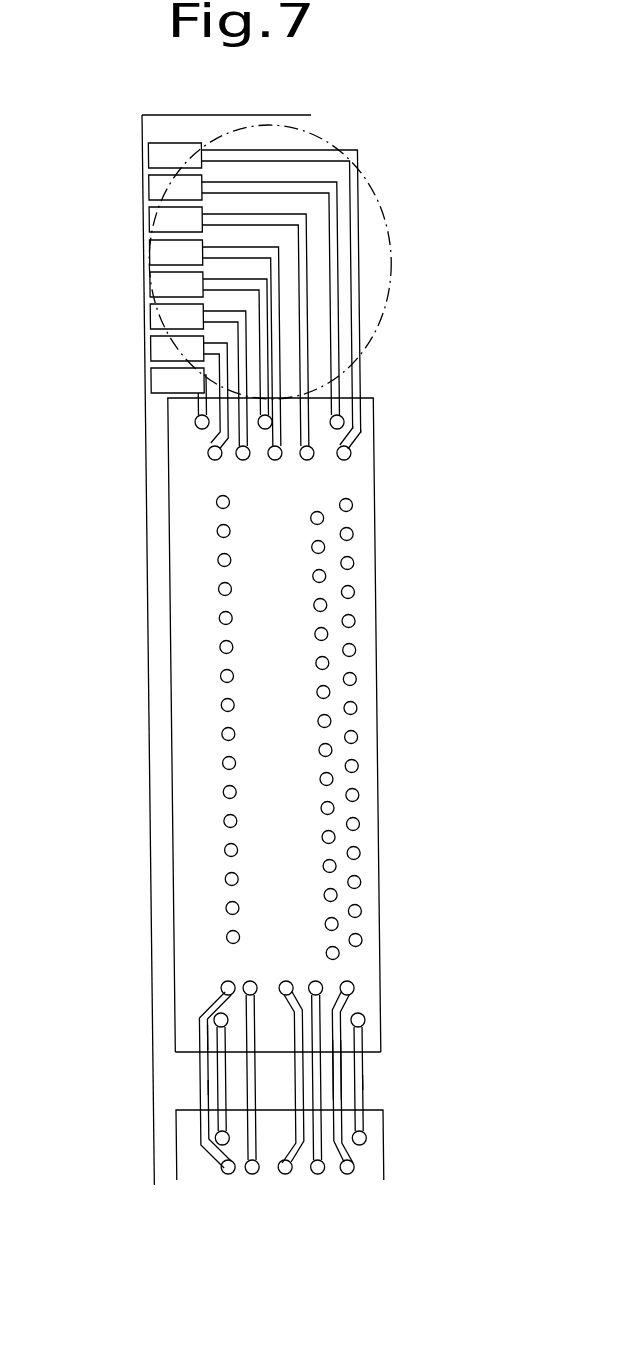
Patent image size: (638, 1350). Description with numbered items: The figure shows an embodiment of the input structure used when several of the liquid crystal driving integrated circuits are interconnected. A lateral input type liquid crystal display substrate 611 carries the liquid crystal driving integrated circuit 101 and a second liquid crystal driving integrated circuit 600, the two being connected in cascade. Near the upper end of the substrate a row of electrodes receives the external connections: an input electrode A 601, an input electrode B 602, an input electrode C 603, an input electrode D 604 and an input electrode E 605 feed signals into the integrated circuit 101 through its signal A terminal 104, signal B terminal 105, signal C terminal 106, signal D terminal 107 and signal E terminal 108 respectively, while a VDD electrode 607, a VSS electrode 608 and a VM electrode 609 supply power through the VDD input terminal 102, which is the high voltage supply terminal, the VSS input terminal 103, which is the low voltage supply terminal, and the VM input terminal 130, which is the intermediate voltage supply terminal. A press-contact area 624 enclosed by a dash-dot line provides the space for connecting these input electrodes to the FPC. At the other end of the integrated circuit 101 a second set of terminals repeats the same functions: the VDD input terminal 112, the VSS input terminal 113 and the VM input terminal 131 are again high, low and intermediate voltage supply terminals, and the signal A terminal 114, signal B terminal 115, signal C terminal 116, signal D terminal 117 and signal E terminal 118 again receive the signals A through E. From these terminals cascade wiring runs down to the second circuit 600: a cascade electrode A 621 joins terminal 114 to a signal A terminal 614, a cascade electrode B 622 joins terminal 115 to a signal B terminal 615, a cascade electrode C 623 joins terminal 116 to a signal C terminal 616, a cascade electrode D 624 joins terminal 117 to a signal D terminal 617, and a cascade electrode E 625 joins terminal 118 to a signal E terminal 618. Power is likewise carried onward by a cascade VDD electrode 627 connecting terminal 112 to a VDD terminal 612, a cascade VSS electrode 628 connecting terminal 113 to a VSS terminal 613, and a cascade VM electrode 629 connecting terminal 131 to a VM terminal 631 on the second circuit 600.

The liquid crystal driving integrated circuit 101 is at (380, 583).
The VDD input terminal 102 is at (269, 461).
The VSS input terminal 103 is at (362, 408).
The signal A terminal 104 is at (208, 454).
The signal B terminal 105 is at (236, 459).
The signal C terminal 106 is at (300, 461).
The signal D terminal 107 is at (352, 456).
The signal E terminal 108 is at (345, 416).
The VDD input terminal 112 is at (262, 985).
The VSS input terminal 113 is at (366, 1013).
The signal A terminal 114 is at (212, 975).
The signal B terminal 115 is at (233, 978).
The signal C terminal 116 is at (288, 980).
The signal D terminal 117 is at (318, 981).
The signal E terminal 118 is at (347, 981).
The VM input terminal 130 is at (195, 423).
The VM input terminal 131 is at (213, 1017).
The second liquid crystal driving integrated circuit 600 is at (384, 1124).
The input electrode A 601 is at (148, 350).
The input electrode B 602 is at (148, 318).
The input electrode C 603 is at (148, 252).
The input electrode D 604 is at (148, 220).
The input electrode E 605 is at (148, 151).
The VDD electrode 607 is at (148, 284).
The VSS electrode 608 is at (148, 188).
The VM electrode 609 is at (148, 382).
The lateral input type liquid crystal display substrate 611 is at (207, 122).
The VDD terminal 612 is at (153, 617).
The VSS terminal 613 is at (366, 1143).
The signal A terminal 614 is at (218, 1168).
The signal B terminal 615 is at (250, 1179).
The signal C terminal 616 is at (286, 1175).
The signal D terminal 617 is at (320, 1177).
The signal E terminal 618 is at (355, 1169).
The cascade electrode A 621 is at (196, 1063).
The cascade electrode B 622 is at (207, 1043).
The cascade electrode C 623 is at (370, 1025).
The cascade electrode D 624 is at (392, 262).
The cascade electrode E 625 is at (383, 1052).
The cascade VDD electrode 627 is at (225, 993).
The cascade VSS electrode 628 is at (368, 1086).
The cascade VM electrode 629 is at (208, 1088).
The VM terminal 631 is at (215, 1135).